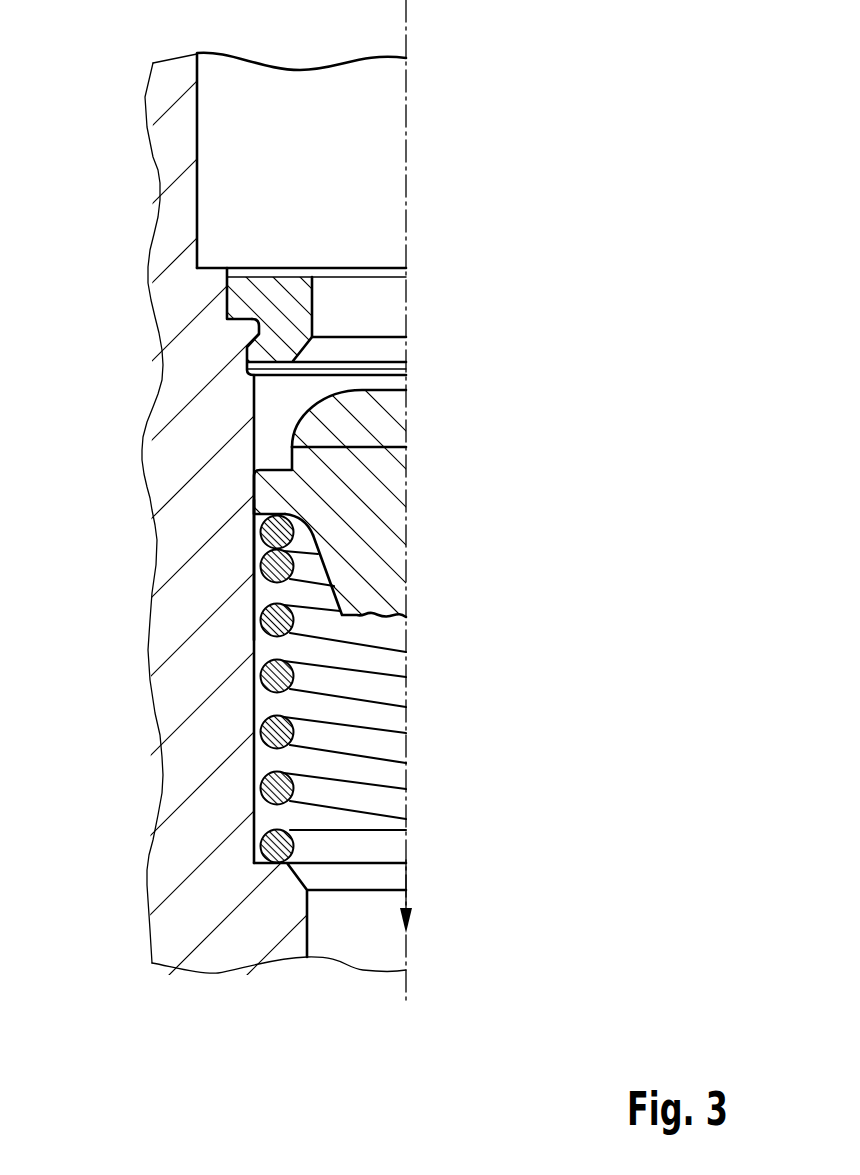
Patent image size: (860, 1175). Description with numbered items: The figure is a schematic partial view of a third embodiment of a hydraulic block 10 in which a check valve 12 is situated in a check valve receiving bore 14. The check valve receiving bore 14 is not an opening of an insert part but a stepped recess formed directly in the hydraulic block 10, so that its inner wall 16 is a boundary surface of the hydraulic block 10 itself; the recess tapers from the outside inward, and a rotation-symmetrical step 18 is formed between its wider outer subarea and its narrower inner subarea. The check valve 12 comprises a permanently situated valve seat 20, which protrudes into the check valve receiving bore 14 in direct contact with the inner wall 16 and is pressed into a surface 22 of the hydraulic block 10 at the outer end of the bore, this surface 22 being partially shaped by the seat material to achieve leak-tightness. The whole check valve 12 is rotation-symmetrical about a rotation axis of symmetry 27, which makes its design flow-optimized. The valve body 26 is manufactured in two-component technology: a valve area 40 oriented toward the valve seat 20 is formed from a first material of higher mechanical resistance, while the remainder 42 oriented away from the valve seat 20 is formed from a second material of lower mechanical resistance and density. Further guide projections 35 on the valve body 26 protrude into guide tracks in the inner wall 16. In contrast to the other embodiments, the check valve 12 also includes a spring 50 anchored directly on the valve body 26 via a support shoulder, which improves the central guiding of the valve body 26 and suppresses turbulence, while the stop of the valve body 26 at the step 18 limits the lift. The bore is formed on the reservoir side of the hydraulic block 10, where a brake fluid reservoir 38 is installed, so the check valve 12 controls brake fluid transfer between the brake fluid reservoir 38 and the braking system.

The hydraulic block 10 is at (177, 434).
The check valve 12 is at (234, 566).
The check valve receiving bore 14 is at (406, 875).
The inner wall 16 is at (270, 660).
The step 18 is at (262, 846).
The valve seat 20 is at (278, 332).
The surface 22 is at (216, 299).
The valve body 26 is at (352, 589).
The rotation axis of symmetry 27 is at (406, 989).
The further guide projections 35 is at (268, 495).
The brake fluid reservoir 38 is at (303, 98).
The valve area 40 is at (372, 427).
The remainder 42 is at (367, 548).
The spring 50 is at (268, 732).